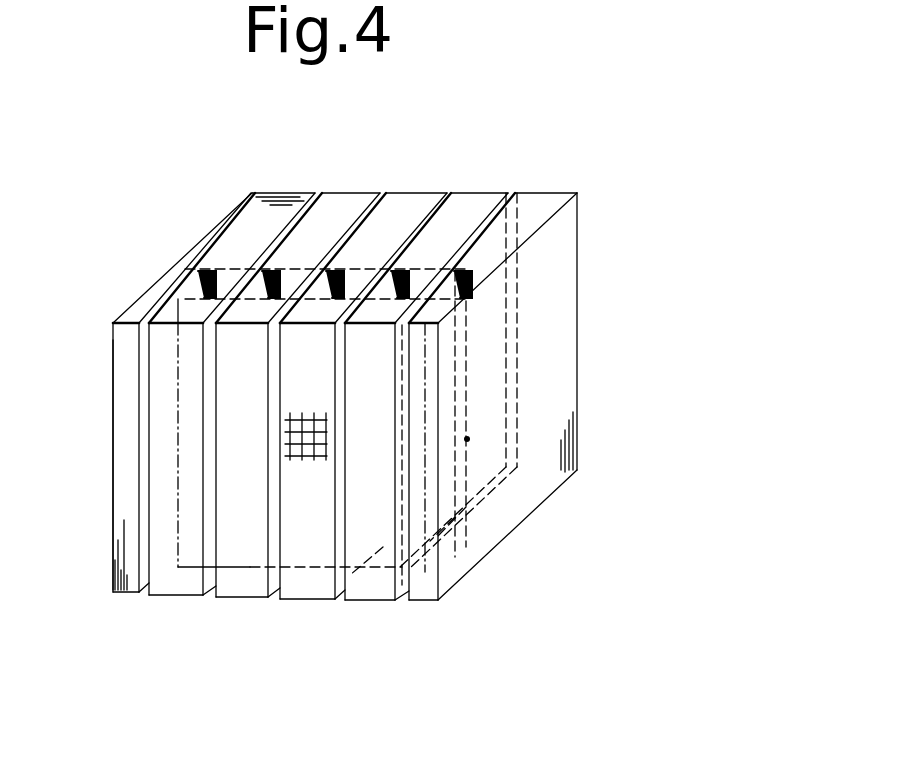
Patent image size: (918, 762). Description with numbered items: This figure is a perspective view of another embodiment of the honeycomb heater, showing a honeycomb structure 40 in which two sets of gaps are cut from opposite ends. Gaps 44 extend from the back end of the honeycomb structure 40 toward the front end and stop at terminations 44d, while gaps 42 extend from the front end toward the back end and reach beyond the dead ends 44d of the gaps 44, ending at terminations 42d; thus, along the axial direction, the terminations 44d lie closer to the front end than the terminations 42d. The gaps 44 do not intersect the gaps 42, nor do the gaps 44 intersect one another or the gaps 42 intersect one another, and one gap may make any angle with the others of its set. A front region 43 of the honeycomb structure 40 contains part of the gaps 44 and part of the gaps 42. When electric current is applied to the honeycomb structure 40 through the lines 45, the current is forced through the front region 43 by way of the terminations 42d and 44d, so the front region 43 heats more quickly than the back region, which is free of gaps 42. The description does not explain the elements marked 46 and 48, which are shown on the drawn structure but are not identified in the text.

The honeycomb structure 40 is at (502, 557).
The gaps 42 is at (402, 602).
The terminations 42d is at (463, 275).
The front region 43 is at (303, 285).
The gaps 44 is at (510, 195).
The terminations 44d is at (403, 273).
The lines 45 is at (113, 430).
The optical waveguide 46 is at (193, 360).
The groove 48 is at (264, 467).